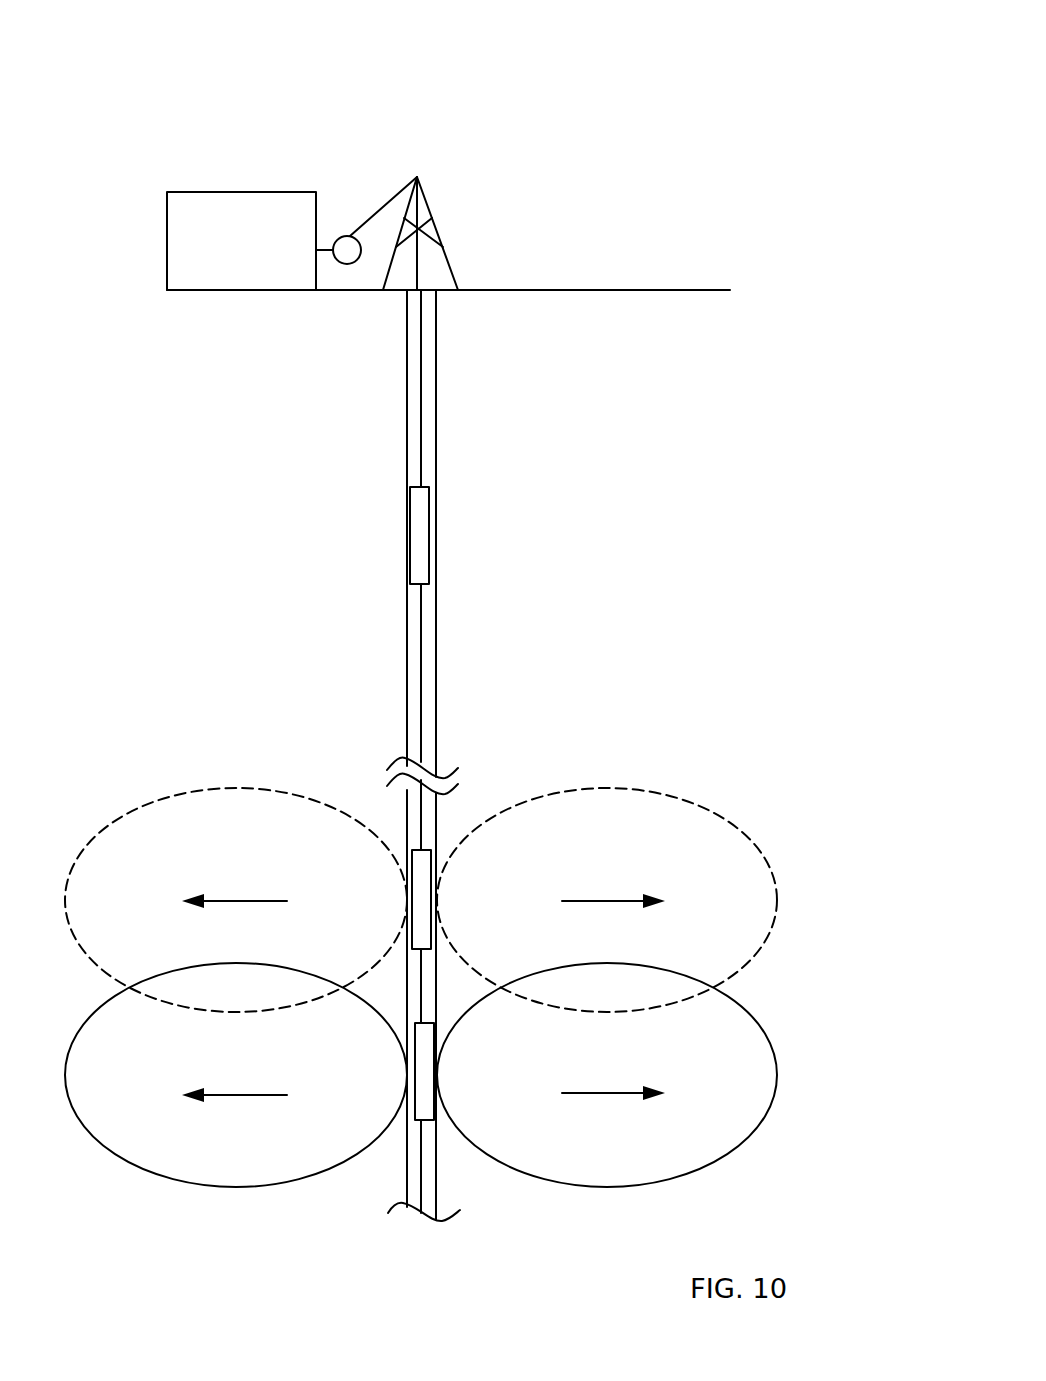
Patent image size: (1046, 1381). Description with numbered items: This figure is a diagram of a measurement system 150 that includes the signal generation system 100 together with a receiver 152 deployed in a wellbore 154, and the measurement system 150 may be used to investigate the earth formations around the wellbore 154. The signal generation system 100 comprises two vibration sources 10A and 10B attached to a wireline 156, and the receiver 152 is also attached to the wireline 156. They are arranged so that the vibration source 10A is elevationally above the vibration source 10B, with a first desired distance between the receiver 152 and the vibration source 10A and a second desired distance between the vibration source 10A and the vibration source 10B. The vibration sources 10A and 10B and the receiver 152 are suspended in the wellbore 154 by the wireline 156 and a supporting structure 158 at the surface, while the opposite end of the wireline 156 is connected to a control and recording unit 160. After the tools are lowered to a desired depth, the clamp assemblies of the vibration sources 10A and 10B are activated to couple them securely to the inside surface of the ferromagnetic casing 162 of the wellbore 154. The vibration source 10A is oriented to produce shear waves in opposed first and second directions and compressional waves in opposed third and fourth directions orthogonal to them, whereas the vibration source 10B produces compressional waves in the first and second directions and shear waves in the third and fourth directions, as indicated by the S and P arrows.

The measurement system 150 is at (447, 60).
The receiver 152 is at (410, 537).
The wellbore 154 is at (412, 360).
The wireline 156 is at (373, 208).
The supporting structure 158 is at (445, 237).
The control and recording unit 160 is at (265, 256).
The ferromagnetic casing 162 is at (437, 360).
The signal generation system 100 is at (345, 770).
The vibration source 10A is at (411, 899).
The vibration source 10B is at (414, 1069).